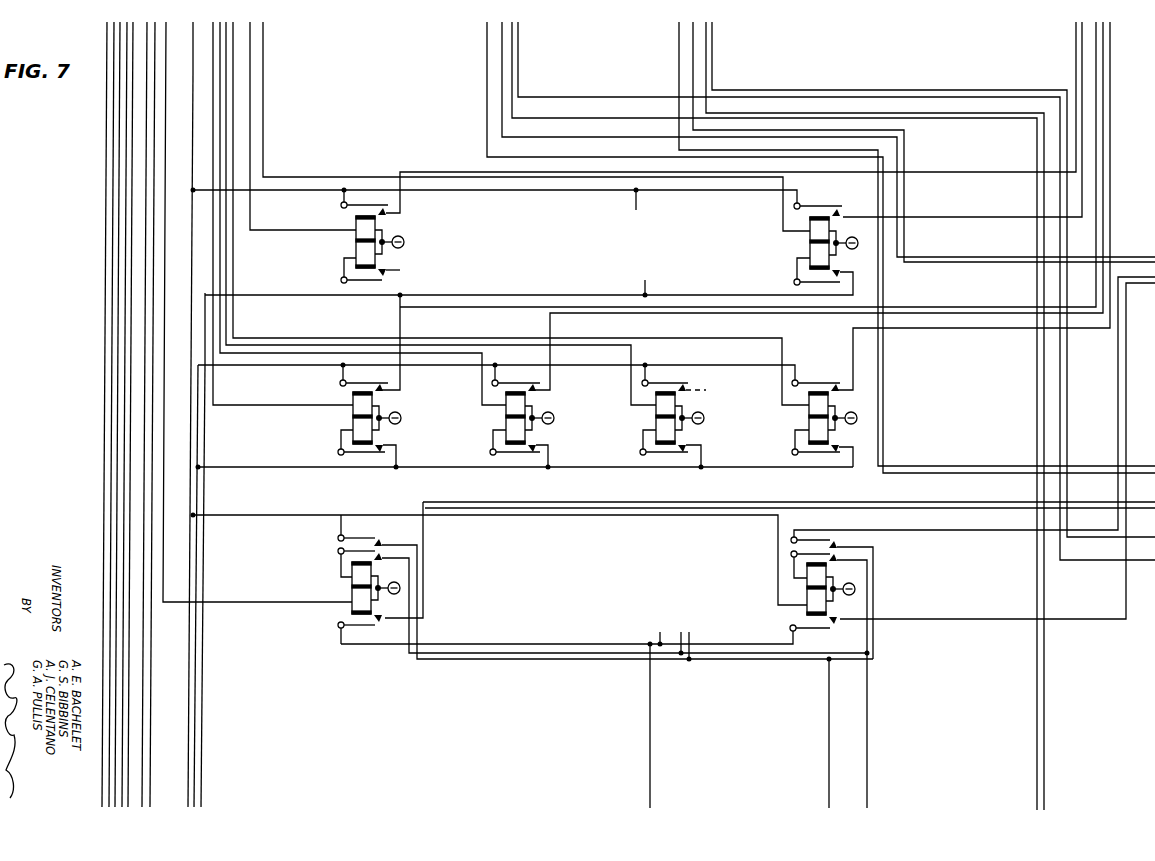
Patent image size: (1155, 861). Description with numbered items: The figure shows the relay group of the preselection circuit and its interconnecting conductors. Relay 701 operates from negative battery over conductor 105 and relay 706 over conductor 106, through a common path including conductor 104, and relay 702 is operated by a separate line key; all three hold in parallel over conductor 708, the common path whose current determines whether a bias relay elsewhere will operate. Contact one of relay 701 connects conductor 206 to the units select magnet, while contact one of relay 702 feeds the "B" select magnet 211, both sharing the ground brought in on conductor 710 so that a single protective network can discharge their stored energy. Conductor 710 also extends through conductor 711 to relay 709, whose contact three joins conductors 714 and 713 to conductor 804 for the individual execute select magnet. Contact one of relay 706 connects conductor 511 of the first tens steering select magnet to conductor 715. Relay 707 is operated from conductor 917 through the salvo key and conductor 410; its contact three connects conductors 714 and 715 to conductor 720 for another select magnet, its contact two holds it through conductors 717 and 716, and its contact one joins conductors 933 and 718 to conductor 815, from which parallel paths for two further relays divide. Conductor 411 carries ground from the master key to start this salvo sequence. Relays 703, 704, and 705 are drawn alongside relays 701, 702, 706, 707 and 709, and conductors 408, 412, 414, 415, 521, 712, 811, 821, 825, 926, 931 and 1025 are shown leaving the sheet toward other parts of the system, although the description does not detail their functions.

The conductor 104 is at (127, 128).
The conductor 105 is at (250, 30).
The conductor 106 is at (233, 52).
The conductor 206 is at (1076, 30).
The select magnet 211 is at (1082, 50).
The signal line 408 is at (147, 110).
The conductor 410 is at (230, 612).
The conductor 411 is at (114, 270).
The signal line 412 is at (512, 30).
The signal line 414 is at (712, 30).
The signal line 415 is at (518, 50).
The conductor 511 is at (1103, 50).
The signal line 521 is at (1110, 30).
The relay 701 is at (356, 239).
The relay 702 is at (810, 240).
The flip-flop L 703 is at (353, 417).
The flip-flop M 704 is at (506, 417).
The flip-flop N 705 is at (656, 417).
The relay 706 is at (809, 414).
The relay 707 is at (352, 589).
The conductor 708 is at (467, 294).
The relay 709 is at (807, 590).
The conductor 710 is at (289, 192).
The conductor 711 is at (292, 505).
The signal line 712 is at (194, 73).
The conductor 713 is at (720, 643).
The conductor 714 is at (650, 797).
The conductor 715 is at (195, 703).
The conductor 716 is at (867, 797).
The conductor 717 is at (408, 650).
The conductor 718 is at (445, 661).
The conductor 720 is at (593, 503).
The conductor 804 is at (1095, 619).
The signal line 811 is at (487, 30).
The conductor 815 is at (1096, 508).
The signal line 821 is at (502, 50).
The signal line 825 is at (679, 30).
The conductor 917 is at (120, 242).
The signal line 926 is at (155, 92).
The signal line 931 is at (133, 150).
The conductor 933 is at (829, 797).
The signal line 1025 is at (103, 628).